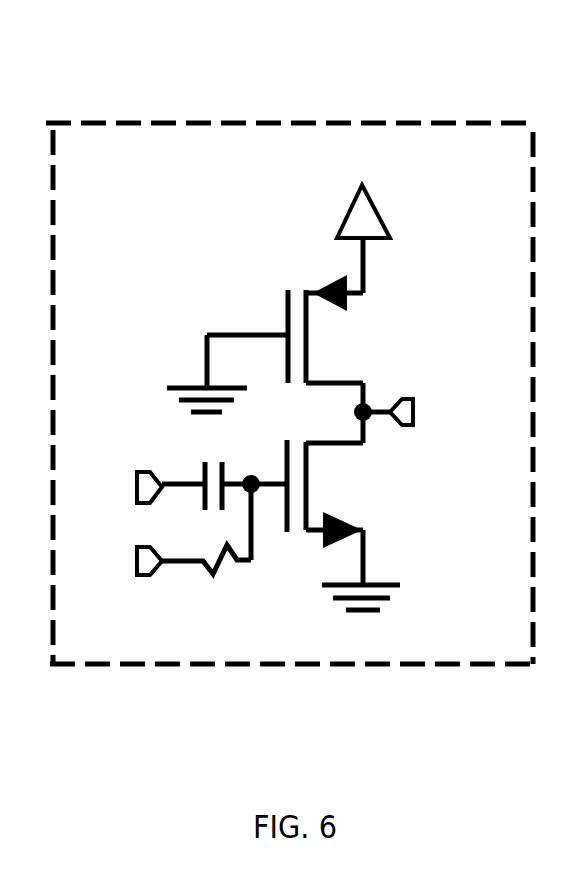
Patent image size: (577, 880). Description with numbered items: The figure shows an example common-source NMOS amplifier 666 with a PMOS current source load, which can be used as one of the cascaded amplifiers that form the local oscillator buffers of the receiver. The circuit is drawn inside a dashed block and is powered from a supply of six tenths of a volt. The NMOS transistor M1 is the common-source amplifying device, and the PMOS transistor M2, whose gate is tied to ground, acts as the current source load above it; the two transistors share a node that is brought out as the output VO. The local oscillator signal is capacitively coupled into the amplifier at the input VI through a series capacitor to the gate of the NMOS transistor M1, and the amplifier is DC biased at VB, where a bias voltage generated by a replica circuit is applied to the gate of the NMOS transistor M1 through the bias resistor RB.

The common-source NMOS amplifier 666 is at (293, 118).
The PMOS transistor M2 is at (312, 330).
The NMOS transistor M1 is at (357, 494).
The bias resistor RB is at (219, 602).
The output terminal VO is at (435, 440).
The input terminal VI is at (120, 492).
The bias voltage input VB is at (120, 580).